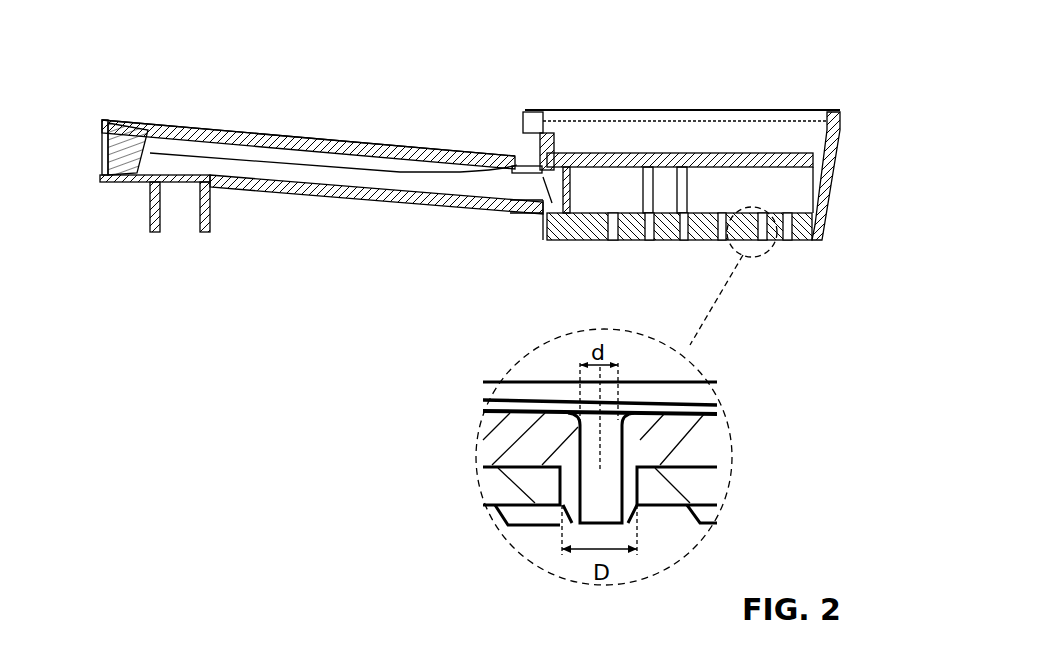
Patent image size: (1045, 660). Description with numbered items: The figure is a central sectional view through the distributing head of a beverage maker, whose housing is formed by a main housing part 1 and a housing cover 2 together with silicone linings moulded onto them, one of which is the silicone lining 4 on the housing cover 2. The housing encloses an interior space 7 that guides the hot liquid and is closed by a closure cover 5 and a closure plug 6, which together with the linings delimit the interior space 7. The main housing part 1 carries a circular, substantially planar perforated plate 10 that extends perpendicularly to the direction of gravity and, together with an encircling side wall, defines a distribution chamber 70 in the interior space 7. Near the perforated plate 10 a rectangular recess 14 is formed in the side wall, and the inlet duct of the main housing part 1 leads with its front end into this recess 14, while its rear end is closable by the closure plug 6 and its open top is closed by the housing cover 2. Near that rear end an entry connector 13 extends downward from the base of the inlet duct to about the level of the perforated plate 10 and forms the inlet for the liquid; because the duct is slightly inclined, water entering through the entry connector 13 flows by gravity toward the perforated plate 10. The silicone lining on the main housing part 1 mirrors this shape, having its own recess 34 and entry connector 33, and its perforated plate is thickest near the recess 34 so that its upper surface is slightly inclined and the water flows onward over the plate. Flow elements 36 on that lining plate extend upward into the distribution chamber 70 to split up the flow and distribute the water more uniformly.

The main housing part 1 is at (393, 222).
The housing cover 2 is at (273, 110).
The silicone lining 4 is at (181, 126).
The closure cover 5 is at (748, 85).
The closure plug 6 is at (89, 158).
The interior space 7 is at (307, 175).
The perforated plate 10 is at (508, 485).
The entry connector 13 is at (210, 210).
The recess 14 is at (538, 182).
The entry connector 33 is at (153, 228).
The recess 34 is at (532, 207).
The flow elements 36 is at (667, 240).
The distribution chamber 70 is at (730, 190).